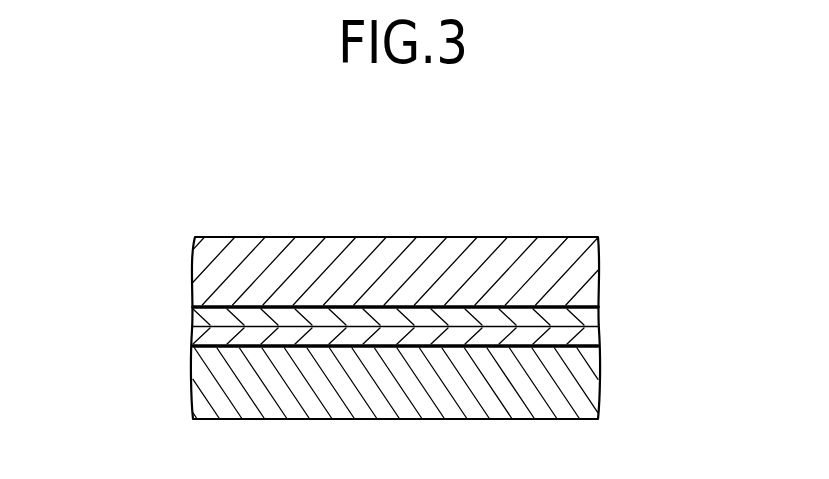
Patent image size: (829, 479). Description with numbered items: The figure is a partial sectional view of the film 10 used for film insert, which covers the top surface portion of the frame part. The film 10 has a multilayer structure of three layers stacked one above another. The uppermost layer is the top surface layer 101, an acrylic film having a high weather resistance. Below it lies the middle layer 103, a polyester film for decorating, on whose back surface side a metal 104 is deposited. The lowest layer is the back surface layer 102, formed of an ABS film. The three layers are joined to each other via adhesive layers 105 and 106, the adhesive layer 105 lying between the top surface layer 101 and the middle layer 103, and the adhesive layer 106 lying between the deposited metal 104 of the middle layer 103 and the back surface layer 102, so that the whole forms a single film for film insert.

The film 10 is at (140, 217).
The top surface layer 101 is at (577, 253).
The back surface layer 102 is at (597, 397).
The middle layer 103 is at (590, 320).
The metal 104 is at (587, 334).
The adhesive layer 105 is at (588, 302).
The adhesive layer 106 is at (595, 346).